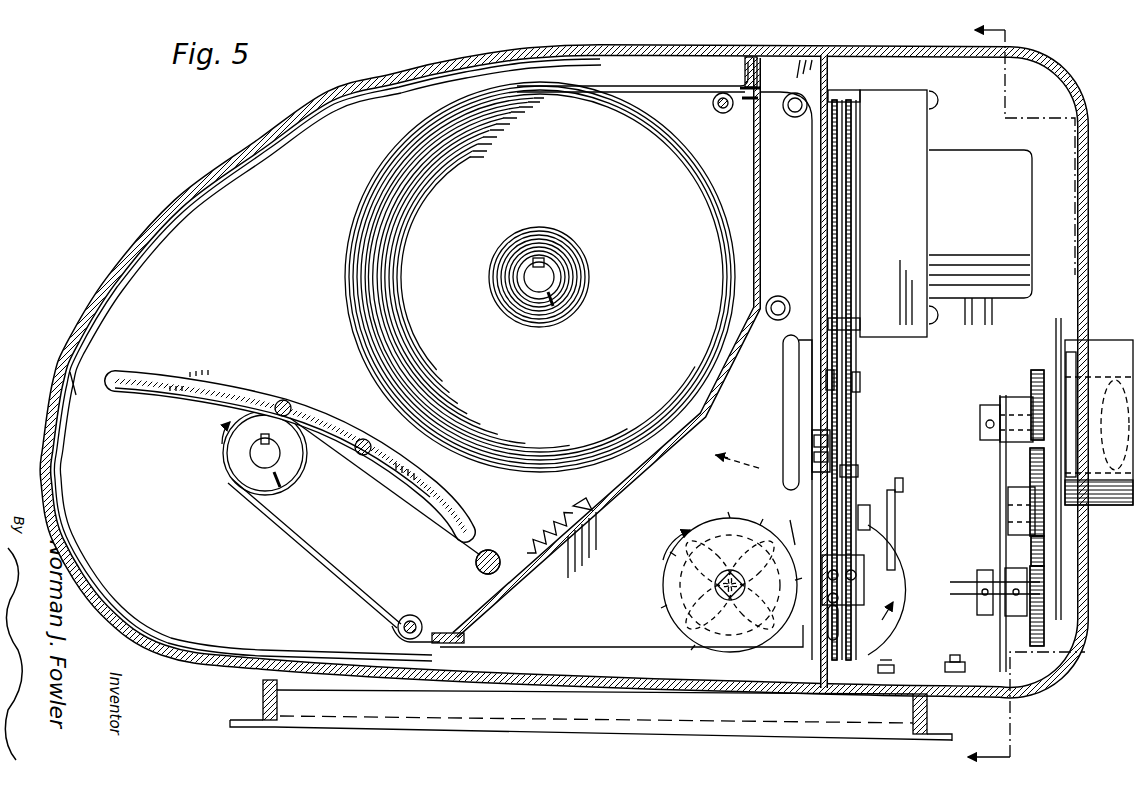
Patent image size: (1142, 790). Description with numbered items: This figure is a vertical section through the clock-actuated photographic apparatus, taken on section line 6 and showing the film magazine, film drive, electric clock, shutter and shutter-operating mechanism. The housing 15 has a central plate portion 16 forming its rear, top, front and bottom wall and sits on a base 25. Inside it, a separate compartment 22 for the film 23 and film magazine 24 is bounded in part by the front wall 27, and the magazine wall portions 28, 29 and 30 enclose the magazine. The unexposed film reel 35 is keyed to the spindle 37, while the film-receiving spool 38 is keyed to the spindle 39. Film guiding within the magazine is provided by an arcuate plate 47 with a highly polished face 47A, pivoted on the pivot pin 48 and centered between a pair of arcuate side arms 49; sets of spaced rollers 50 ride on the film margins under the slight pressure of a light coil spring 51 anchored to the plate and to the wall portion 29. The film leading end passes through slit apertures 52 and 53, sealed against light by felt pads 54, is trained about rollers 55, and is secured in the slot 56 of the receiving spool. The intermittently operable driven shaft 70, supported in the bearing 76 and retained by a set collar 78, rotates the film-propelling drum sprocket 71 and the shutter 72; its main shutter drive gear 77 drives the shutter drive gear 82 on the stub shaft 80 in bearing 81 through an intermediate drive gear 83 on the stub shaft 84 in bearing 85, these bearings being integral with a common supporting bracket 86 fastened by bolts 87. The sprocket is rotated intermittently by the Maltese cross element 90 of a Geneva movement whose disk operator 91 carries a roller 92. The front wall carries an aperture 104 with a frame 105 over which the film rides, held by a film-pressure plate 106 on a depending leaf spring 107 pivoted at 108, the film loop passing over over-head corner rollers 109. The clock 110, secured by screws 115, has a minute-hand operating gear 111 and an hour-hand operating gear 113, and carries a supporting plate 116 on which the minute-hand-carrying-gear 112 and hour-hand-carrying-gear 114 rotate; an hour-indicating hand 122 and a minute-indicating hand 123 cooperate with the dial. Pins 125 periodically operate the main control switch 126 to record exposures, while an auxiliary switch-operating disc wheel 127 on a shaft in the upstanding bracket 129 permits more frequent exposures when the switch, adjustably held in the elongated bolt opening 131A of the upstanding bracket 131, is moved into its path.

The section line 6- 6 is at (1026, 393).
The housing 15 is at (258, 137).
The central plate portion 16 is at (333, 100).
The compartment 22 is at (647, 665).
The film 23 is at (664, 84).
The film magazine 24 is at (187, 203).
The base 25 is at (262, 692).
The front wall 27 is at (828, 72).
The magazine wall portion 28 is at (68, 383).
The front wall portion 29 is at (753, 163).
The magazine wall portion 30 is at (326, 656).
The unexposed film reel 35 is at (383, 172).
The spindle 37 is at (550, 268).
The film-receiving spool 38 is at (238, 453).
The spindle 39 is at (258, 462).
The arcuate plate 47 is at (165, 390).
The highly polished face 47A is at (222, 382).
The pivot pin 48 is at (476, 562).
The arcuate side arms 49 is at (190, 372).
The spaced rollers 50 is at (291, 409).
The coil spring 51 is at (560, 526).
The slit aperture 52 is at (746, 66).
The slit aperture 53 is at (449, 630).
The felt pads 54 is at (743, 88).
The rollers 55 is at (712, 104).
The slot 56 is at (510, 285).
The driven shaft 70 is at (1112, 360).
The film-propelling drum sprocket 71 is at (668, 571).
The shutter 72 is at (1054, 313).
The bearing 76 is at (1012, 572).
The main shutter drive gear 77 is at (1040, 637).
The set collar 78 is at (986, 616).
The stub shaft 80 is at (986, 407).
The bearing 81 is at (1010, 400).
The shutter drive gear 82 is at (1036, 368).
The intermediate drive gear 83 is at (1040, 525).
The stub shaft 84 is at (1008, 487).
The bearing 85 is at (1008, 478).
The supporting bracket 86 is at (998, 640).
The bolts 87 is at (990, 662).
The Maltese cross element 90 is at (690, 597).
The disk operator 91 is at (896, 612).
The roller 92 is at (788, 526).
The aperture 104 is at (795, 413).
The frame 105 is at (783, 380).
The film-pressure plate 106 is at (790, 403).
The leaf spring 107 is at (778, 433).
The pivot 108 is at (788, 290).
The over-head corner rollers 109 is at (792, 117).
The clock 110 is at (905, 148).
The minute-hand operating gear 111 is at (850, 185).
The minute-hand-carrying-gear 112 is at (838, 394).
The hour-hand operating gear 113 is at (838, 208).
The hour-hand-carrying-gear 114 is at (832, 381).
The screws 115 is at (935, 103).
The supporting plate 116 is at (842, 400).
The hour-indicating hand 122 is at (822, 445).
The minute-indicating hand 123 is at (822, 455).
The pins 125 is at (904, 482).
The main control switch 126 is at (860, 470).
The auxiliary switch-operating disc wheel 127 is at (898, 493).
The upstanding bracket 129 is at (878, 664).
The upstanding bracket 131 is at (822, 656).
The elongated bolt opening 131A is at (838, 650).